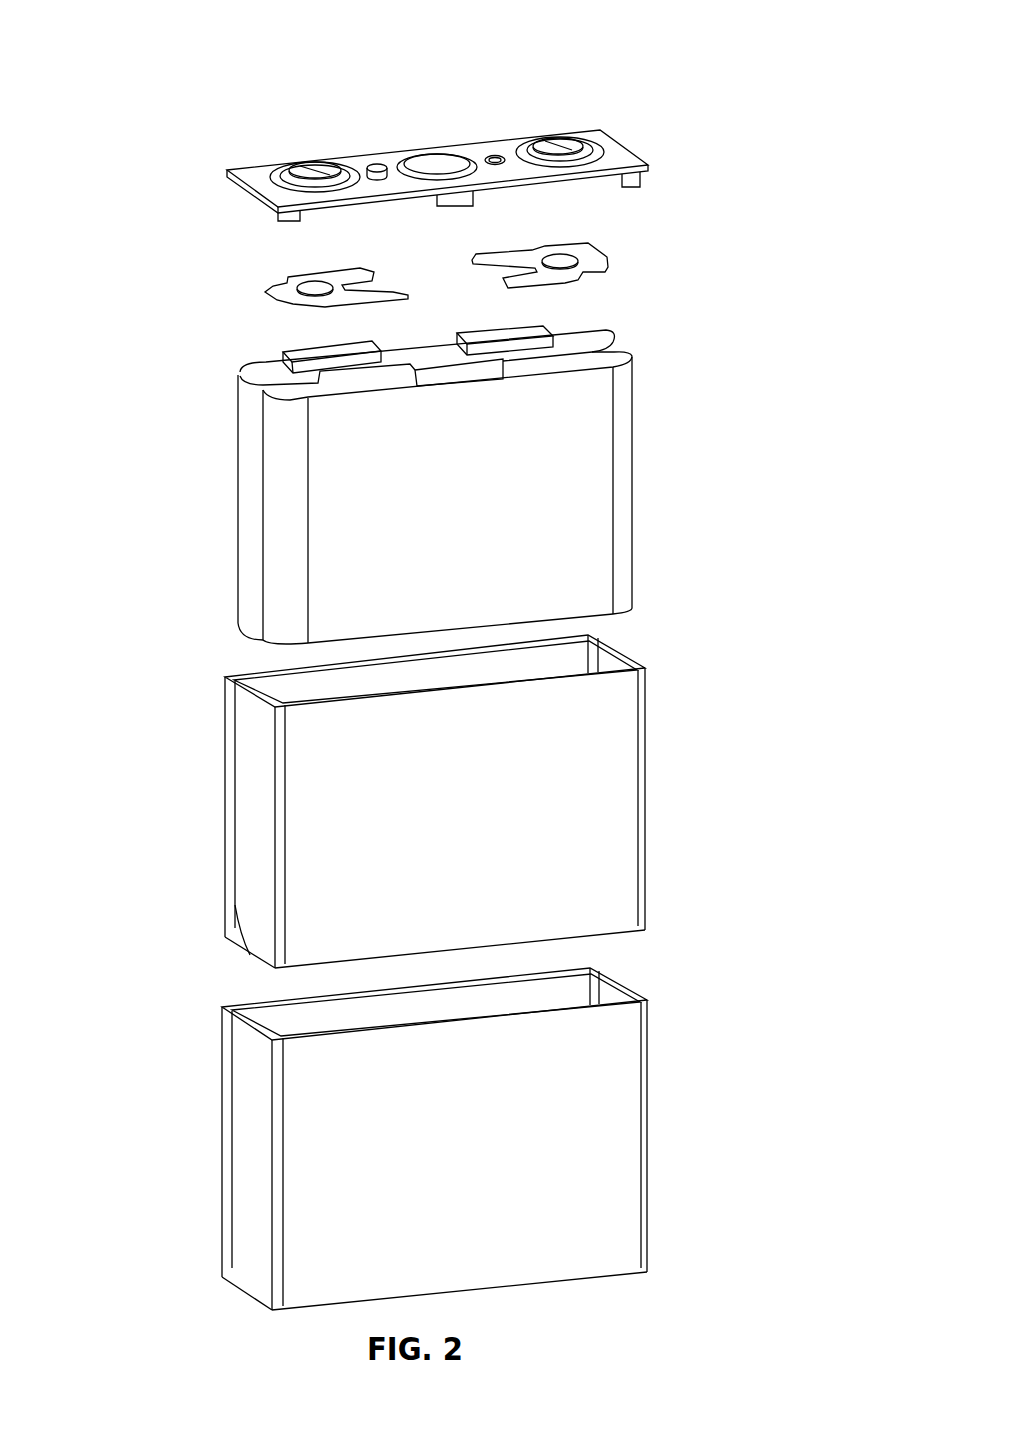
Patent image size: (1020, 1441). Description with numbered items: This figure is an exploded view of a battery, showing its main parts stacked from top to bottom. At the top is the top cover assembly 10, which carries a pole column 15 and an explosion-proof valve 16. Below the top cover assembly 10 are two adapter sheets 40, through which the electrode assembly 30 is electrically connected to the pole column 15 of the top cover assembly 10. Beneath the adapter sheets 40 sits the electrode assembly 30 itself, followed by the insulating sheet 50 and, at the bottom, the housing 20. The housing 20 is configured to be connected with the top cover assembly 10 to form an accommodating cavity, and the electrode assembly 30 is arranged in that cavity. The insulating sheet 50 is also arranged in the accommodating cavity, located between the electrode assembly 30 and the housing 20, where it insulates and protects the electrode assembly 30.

The top cover assembly 10 is at (227, 178).
The pole column 15 is at (560, 147).
The explosion-proof valve 16 is at (437, 165).
The housing 20 is at (240, 1157).
The electrode assembly 30 is at (237, 497).
The adapter sheet 40 is at (270, 290).
The insulating sheet 50 is at (235, 790).